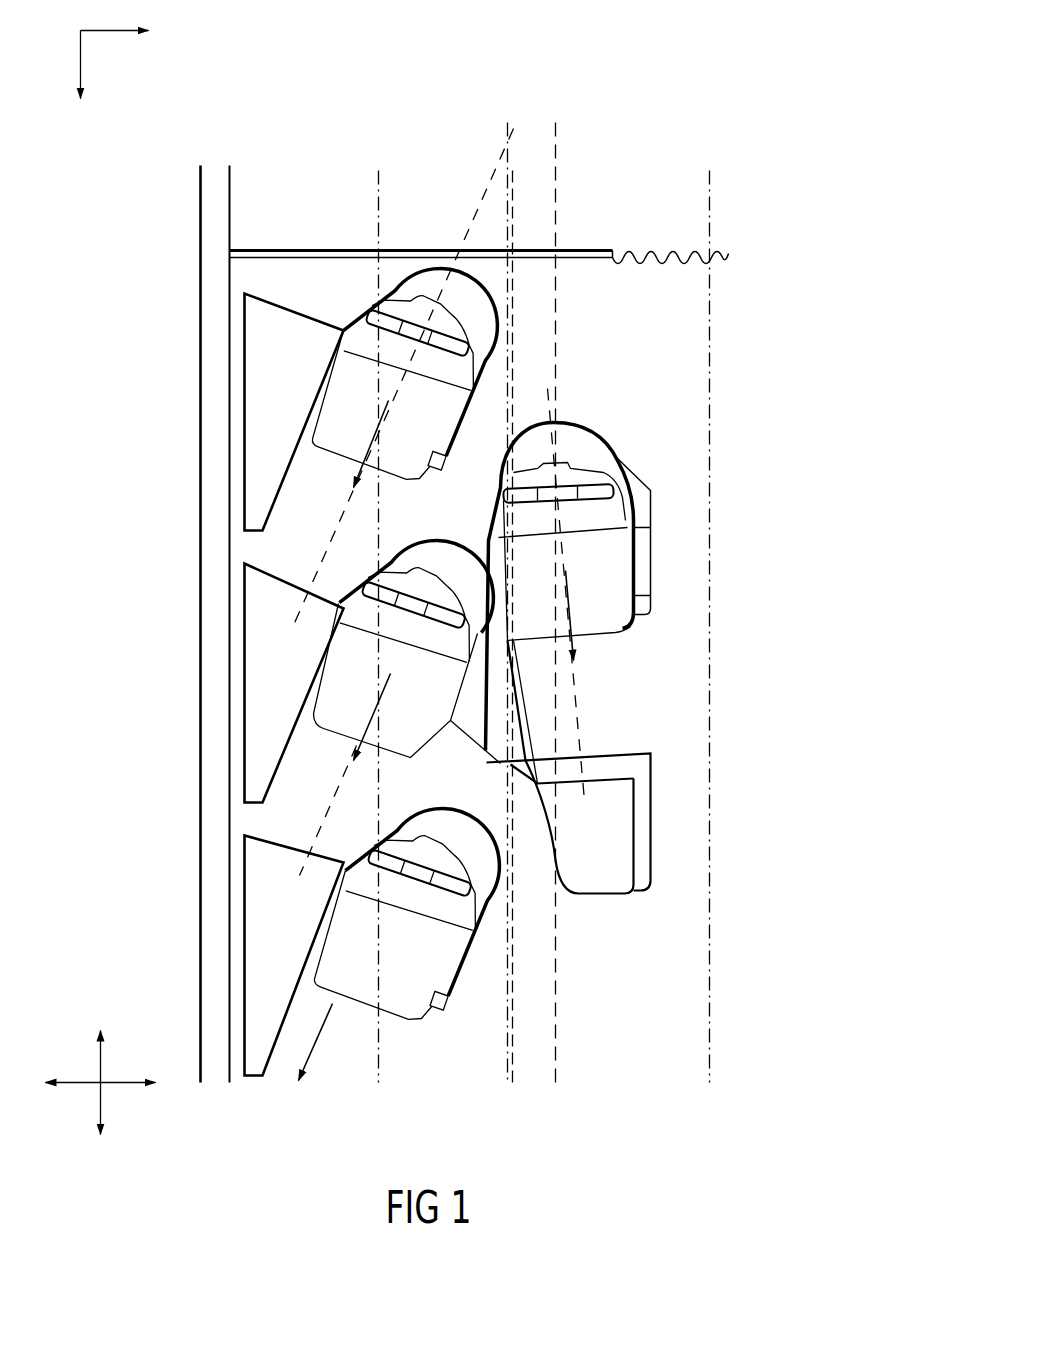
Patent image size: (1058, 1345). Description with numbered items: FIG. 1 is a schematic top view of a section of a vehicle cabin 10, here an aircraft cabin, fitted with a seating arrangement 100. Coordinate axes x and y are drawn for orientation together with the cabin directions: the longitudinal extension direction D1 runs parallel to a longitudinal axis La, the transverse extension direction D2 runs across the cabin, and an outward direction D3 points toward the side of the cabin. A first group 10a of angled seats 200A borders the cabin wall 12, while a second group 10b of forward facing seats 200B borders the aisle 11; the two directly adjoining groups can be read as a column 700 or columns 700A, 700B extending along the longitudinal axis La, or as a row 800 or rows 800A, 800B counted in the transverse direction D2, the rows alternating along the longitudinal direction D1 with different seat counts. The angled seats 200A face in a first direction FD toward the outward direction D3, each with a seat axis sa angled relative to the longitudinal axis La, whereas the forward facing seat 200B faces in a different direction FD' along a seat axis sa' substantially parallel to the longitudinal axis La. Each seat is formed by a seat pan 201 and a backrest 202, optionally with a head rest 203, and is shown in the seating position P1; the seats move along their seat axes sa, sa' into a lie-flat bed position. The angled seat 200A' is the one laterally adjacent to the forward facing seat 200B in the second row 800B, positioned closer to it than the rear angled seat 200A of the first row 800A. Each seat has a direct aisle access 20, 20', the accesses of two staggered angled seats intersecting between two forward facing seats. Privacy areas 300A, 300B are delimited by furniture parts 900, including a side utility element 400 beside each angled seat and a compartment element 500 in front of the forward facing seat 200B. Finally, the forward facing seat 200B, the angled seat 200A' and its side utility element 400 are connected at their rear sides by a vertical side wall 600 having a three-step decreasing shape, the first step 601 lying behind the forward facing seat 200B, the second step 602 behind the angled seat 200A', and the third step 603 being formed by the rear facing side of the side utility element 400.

The vehicle cabin 10 is at (765, 172).
The first group 10a is at (357, 145).
The second group 10b is at (534, 128).
The aisle 11 is at (768, 502).
The cabin wall 12 is at (196, 192).
The direct aisle access 20 is at (587, 354).
The direct aisle access 20' is at (556, 978).
The seating arrangement 100 is at (627, 120).
The angled seat 200A is at (315, 584).
The angled seat 200A' is at (307, 638).
The forward facing seat 200B is at (642, 565).
The seat pan 201 is at (342, 377).
The backrest 202 is at (365, 337).
The head rest 203 is at (378, 303).
The privacy area 300A is at (240, 735).
The privacy area 300B is at (670, 745).
The side utility element 400 is at (240, 447).
The compartment element 500 is at (670, 822).
The vertical side wall 600 is at (668, 432).
The first step 601 is at (572, 422).
The second step 602 is at (445, 546).
The third step 603 is at (330, 606).
The column 700 is at (486, 93).
The column 700A is at (290, 97).
The column 700B is at (681, 92).
The row 800 is at (120, 705).
The first row 800A is at (792, 348).
The second row 800B is at (797, 556).
The furniture parts 900 is at (240, 414).
The longitudinal axis La is at (507, 124).
The seat axis sa is at (331, 502).
The seat axis sa' is at (617, 595).
The first direction FD is at (266, 571).
The facing direction FD' is at (626, 616).
The seating position P1 is at (347, 296).
The longitudinal direction D1 is at (118, 1072).
The transverse direction D2 is at (114, 1099).
The outward direction D3 is at (327, 1042).
The x axis x is at (72, 72).
The y axis y is at (123, 31).